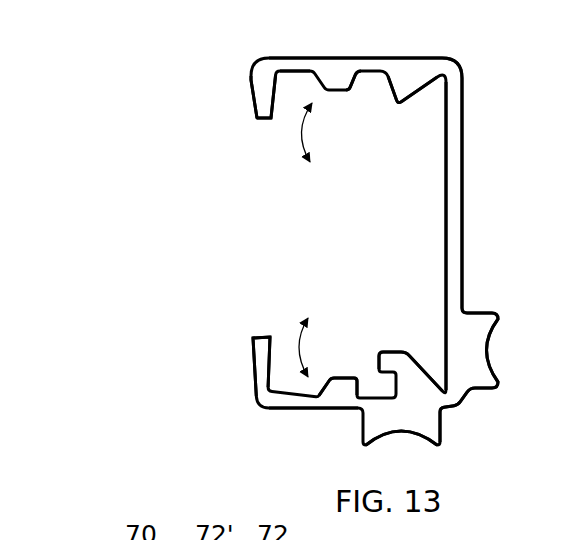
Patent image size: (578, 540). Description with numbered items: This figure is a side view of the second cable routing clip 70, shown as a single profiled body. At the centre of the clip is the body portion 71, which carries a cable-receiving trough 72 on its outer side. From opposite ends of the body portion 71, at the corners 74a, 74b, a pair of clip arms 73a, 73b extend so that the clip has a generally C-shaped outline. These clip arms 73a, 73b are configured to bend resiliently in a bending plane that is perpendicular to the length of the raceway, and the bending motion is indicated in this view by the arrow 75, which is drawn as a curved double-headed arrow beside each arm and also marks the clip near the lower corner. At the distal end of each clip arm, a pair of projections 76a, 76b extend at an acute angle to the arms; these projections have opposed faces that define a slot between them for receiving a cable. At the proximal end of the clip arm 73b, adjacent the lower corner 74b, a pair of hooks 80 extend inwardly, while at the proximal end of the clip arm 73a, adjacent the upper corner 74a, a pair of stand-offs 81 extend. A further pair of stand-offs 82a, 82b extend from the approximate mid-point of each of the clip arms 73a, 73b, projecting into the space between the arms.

The second clip 70 is at (352, 251).
The body portion 71 is at (445, 240).
The cable-receiving trough 72 is at (490, 347).
The clip arm 73a is at (335, 58).
The clip arm 73b is at (330, 410).
The corner 74a is at (465, 72).
The corner 74b is at (457, 406).
The arrow 75 is at (303, 132).
The projection 76a is at (252, 106).
The projection 76b is at (255, 378).
The hooks 80 is at (408, 350).
The stand-offs 81 is at (404, 106).
The stand-off 82a is at (360, 72).
The stand-off 82b is at (344, 378).